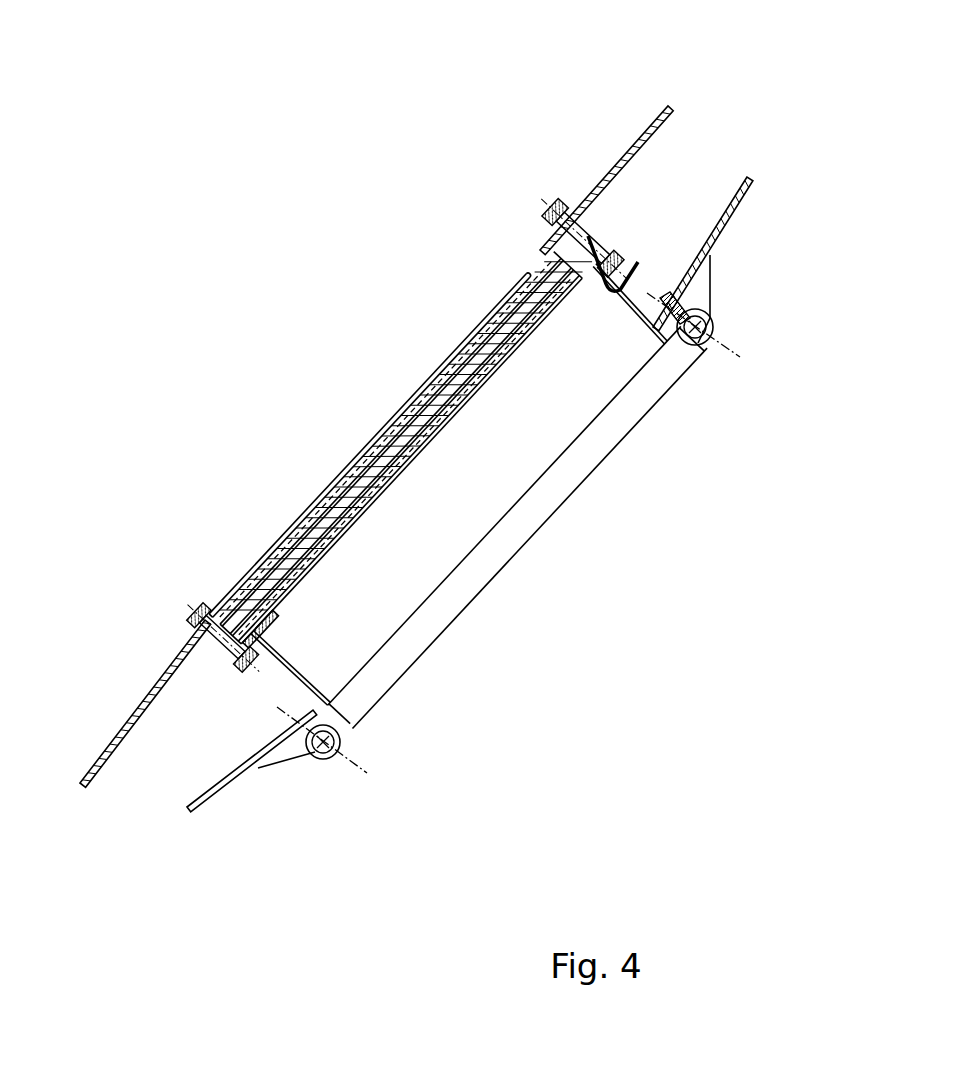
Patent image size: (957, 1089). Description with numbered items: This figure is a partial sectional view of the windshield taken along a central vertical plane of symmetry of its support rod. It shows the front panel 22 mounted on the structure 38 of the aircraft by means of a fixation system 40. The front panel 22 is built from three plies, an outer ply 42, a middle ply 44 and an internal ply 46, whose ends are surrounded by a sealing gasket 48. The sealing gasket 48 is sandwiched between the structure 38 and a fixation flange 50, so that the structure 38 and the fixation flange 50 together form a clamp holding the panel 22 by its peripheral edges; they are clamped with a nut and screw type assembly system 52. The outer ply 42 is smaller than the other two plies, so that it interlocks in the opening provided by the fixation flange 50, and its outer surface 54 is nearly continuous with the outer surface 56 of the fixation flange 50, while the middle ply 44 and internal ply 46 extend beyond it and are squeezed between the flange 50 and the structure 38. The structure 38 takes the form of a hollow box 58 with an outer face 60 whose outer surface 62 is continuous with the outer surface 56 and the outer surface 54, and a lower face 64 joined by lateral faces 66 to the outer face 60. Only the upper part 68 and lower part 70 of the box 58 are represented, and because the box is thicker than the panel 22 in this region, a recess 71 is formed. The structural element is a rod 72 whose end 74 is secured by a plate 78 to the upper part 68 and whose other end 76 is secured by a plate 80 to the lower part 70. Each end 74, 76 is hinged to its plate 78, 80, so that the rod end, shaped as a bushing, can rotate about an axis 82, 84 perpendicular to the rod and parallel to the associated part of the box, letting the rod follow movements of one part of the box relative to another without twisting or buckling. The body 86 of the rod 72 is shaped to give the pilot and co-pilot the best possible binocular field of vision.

The front panel 22 is at (345, 290).
The structure of the aircraft 38 is at (660, 190).
The fixation system 40 is at (545, 212).
The outer ply 42 is at (400, 410).
The middle ply 44 is at (330, 497).
The internal ply 46 is at (327, 537).
The sealing gasket 48 is at (222, 612).
The fixation flange 50 is at (198, 626).
The nut and screw type assembly system 52 is at (630, 243).
The outer surface of the outer ply 54 is at (450, 350).
The outer surface of the fixation flange 56 is at (560, 240).
The hollow box 58 is at (685, 130).
The outer face 60 is at (123, 723).
The outer surface of the outer face 62 is at (637, 133).
The lower face 64 is at (747, 192).
The lateral faces 66 is at (700, 310).
The upper part of the box 68 is at (710, 195).
The lower part of the box 70 is at (167, 772).
The recess 71 is at (452, 527).
The rod 72 is at (430, 623).
The end of the rod 74 is at (703, 342).
The end of the rod 76 is at (353, 727).
The plate 78 is at (710, 280).
The plate 80 is at (292, 753).
The axis 82 is at (713, 328).
The axis 84 is at (333, 753).
The body of the rod 86 is at (557, 487).